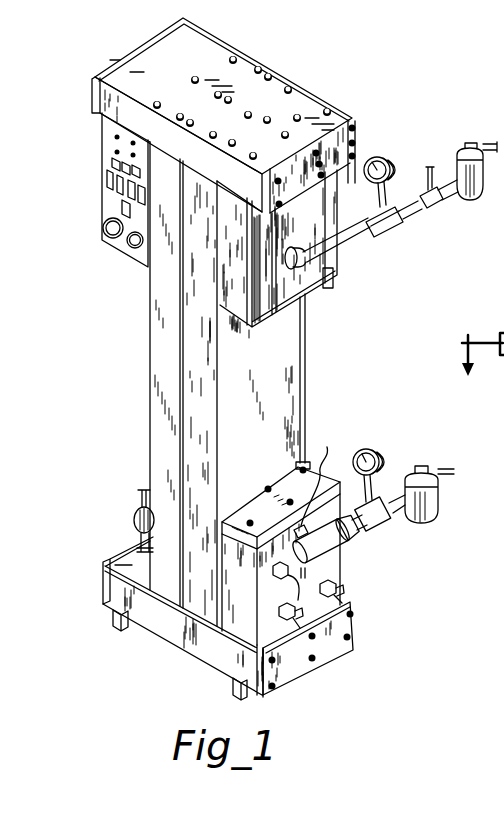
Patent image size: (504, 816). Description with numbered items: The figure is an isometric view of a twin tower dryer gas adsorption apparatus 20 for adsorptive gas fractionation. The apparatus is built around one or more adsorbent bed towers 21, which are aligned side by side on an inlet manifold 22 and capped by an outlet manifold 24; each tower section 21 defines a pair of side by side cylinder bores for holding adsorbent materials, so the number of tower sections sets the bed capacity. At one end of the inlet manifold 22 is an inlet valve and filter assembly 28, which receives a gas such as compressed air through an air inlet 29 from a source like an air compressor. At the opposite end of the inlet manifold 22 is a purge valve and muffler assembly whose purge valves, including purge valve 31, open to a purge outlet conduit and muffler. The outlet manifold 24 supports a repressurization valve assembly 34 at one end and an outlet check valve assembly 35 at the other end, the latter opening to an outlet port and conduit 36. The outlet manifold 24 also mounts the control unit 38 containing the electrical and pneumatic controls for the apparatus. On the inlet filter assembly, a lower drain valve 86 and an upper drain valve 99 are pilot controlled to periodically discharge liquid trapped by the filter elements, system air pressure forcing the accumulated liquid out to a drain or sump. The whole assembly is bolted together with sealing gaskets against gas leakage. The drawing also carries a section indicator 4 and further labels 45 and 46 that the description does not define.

The twin tower dryer gas adsorption apparatus 20 is at (327, 344).
The adsorbent bed tower 21 is at (158, 363).
The inlet manifold 22 is at (182, 640).
The outlet manifold 24 is at (300, 108).
The inlet valve and filter assembly 28 is at (344, 564).
The air inlet 29 is at (324, 474).
The purge valve 31 is at (130, 512).
The repressurization valve assembly 34 is at (92, 80).
The outlet check valve assembly 35 is at (340, 188).
The outlet port and conduit 36 is at (347, 243).
The control unit 38 is at (120, 258).
The manifold block 45 is at (337, 642).
The base frame member 46 is at (103, 572).
The drain valve 86 is at (340, 581).
The drain valve 99 is at (270, 572).
The section line indicator 4 is at (482, 371).